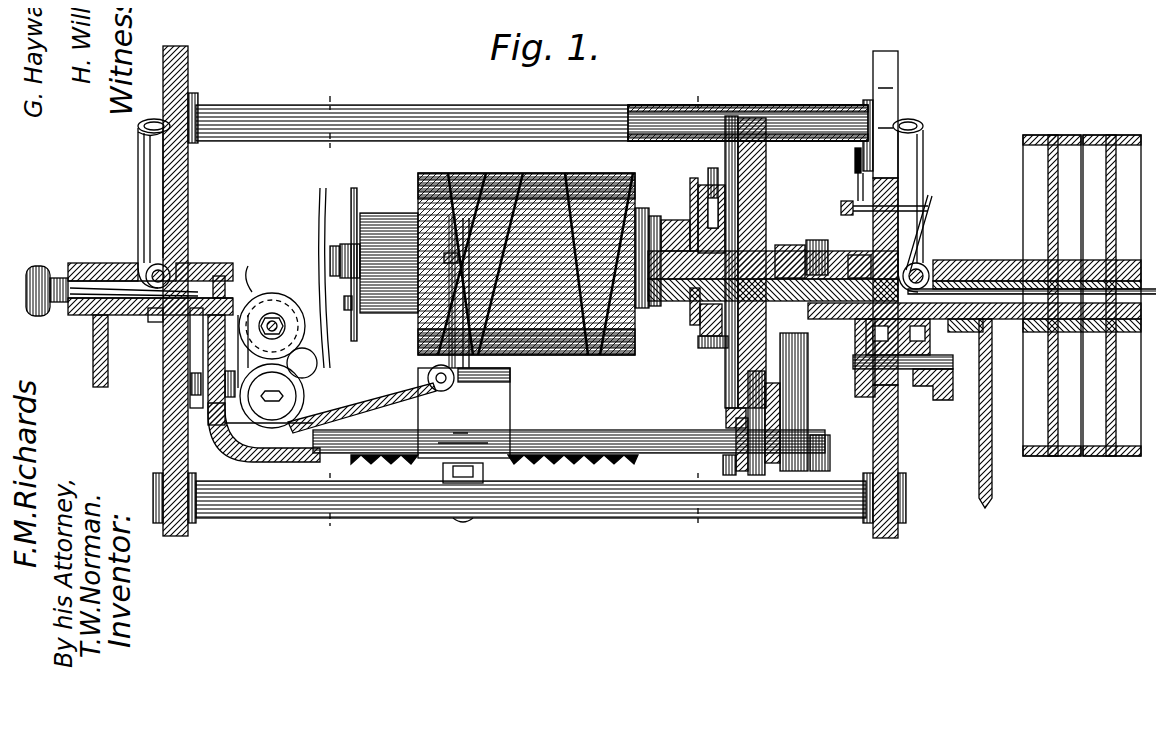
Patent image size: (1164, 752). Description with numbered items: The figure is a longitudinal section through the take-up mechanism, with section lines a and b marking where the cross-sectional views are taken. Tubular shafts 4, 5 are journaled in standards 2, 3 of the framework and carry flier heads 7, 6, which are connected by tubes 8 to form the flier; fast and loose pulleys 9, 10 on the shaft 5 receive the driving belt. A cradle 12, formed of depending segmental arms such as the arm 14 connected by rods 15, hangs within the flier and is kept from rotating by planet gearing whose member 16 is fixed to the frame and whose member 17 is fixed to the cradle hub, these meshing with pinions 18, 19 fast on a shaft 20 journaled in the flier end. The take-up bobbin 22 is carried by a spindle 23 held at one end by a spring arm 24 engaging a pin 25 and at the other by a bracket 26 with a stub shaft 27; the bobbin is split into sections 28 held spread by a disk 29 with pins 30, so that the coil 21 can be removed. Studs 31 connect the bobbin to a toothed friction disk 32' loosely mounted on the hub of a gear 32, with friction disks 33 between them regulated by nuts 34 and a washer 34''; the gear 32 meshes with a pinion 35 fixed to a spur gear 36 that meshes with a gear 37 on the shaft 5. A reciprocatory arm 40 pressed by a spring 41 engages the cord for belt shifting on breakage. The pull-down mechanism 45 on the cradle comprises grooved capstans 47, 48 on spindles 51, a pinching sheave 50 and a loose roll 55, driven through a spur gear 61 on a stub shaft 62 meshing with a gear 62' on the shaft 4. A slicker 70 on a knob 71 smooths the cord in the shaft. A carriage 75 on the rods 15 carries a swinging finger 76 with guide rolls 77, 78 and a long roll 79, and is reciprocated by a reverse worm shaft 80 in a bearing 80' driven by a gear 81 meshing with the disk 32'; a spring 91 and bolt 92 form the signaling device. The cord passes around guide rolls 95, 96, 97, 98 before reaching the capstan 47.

The standard 2 is at (100, 362).
The standard 3 is at (970, 420).
The tubular shaft 4 is at (146, 314).
The tubular shaft 5 is at (1012, 320).
The flier head 6 is at (892, 446).
The flier head 7 is at (203, 384).
The tubes 8 is at (492, 106).
The fast pulley 9 is at (1056, 448).
The loose pulley 10 is at (1122, 450).
The cradle 12 is at (244, 456).
The depending segmental arm 14 is at (192, 352).
The rods or bars 15 is at (672, 408).
The planet gearing member 16 is at (928, 258).
The planet gearing member 17 is at (854, 250).
The pinion 18 is at (942, 390).
The pinion 19 is at (856, 376).
The shaft 20 is at (942, 364).
The coil or ball 21 is at (630, 202).
The take-up bobbin 22 is at (420, 196).
The spindle 23 is at (330, 236).
The spring arm 24 is at (308, 208).
The pin 25 is at (330, 262).
The bracket 26 is at (786, 265).
The stub shaft 27 is at (672, 300).
The bobbin sections 28 is at (370, 214).
The disk 29 is at (348, 184).
The pins 30 is at (340, 302).
The studs 31 is at (710, 180).
The gear 32 is at (762, 262).
The friction disk 32' is at (715, 398).
The friction members or disks 33 is at (756, 182).
The nuts 34 is at (712, 219).
The washer 34'' is at (712, 318).
The pinion 35 is at (752, 416).
The spur gear 36 is at (790, 465).
The gear 37 is at (814, 244).
The reciprocatory arm 40 is at (922, 196).
The spring 41 is at (846, 192).
The pull-down mechanism 45 is at (266, 298).
The grooved roll or capstan 47 is at (253, 274).
The grooved roll or capstan 48 is at (266, 446).
The sheave or roll 50 is at (306, 354).
The spindle 51 is at (272, 312).
The grooved roll 55 is at (272, 396).
The spur gear 61 is at (206, 422).
The stub shaft 62 is at (179, 412).
The gear 62' is at (237, 261).
The spring arm or slicker 70 is at (72, 300).
The knob 71 is at (28, 308).
The carriage 75 is at (464, 413).
The swinging finger 76 is at (468, 396).
The roll 77 is at (420, 372).
The roll 78 is at (438, 272).
The roll 79 is at (472, 347).
The reverse worm shaft 80 is at (494, 468).
The bearing 80' is at (745, 483).
The gear 81 is at (714, 456).
The spring 91 is at (432, 464).
The bolt 92 is at (456, 512).
The guide roll 95 is at (910, 256).
The guide roll 96 is at (910, 118).
The guide roll 97 is at (134, 116).
The guide roll 98 is at (148, 258).
The section line a— a is at (326, 309).
The section line b— b is at (693, 309).